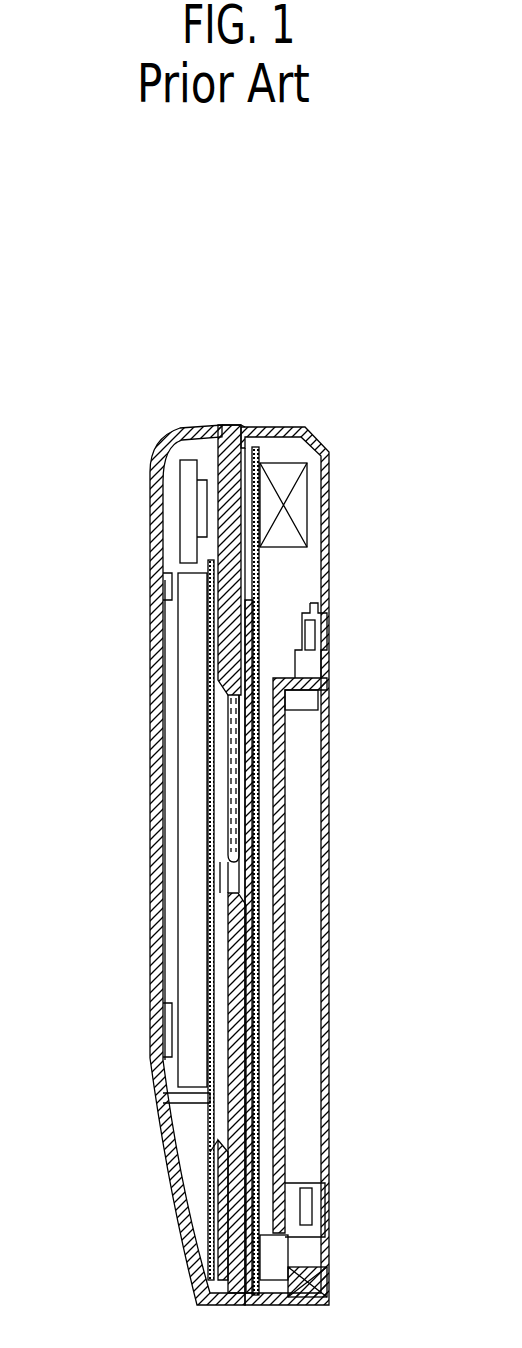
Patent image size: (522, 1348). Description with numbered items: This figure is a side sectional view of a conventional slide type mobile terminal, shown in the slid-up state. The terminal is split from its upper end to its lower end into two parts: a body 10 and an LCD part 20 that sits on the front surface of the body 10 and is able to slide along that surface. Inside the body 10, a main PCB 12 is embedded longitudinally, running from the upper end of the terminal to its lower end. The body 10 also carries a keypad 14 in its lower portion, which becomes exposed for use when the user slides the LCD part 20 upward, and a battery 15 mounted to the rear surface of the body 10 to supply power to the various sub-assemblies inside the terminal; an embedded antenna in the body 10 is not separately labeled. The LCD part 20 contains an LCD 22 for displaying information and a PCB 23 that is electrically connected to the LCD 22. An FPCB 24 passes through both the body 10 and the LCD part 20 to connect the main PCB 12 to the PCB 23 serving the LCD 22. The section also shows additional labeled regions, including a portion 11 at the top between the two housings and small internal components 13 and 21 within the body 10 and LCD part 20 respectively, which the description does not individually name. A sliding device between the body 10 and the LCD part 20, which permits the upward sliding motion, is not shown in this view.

The body 10 is at (300, 418).
The hinge portion 11 is at (250, 425).
The main PCB 12 is at (259, 578).
The battery/component block 13 is at (292, 503).
The keypad 14 is at (246, 1032).
The battery 15 is at (312, 938).
The LCD part 20 is at (178, 421).
The speaker 21 is at (163, 506).
The LCD 22 is at (197, 750).
The PCB 23 is at (210, 1172).
The FPCB 24 is at (232, 757).